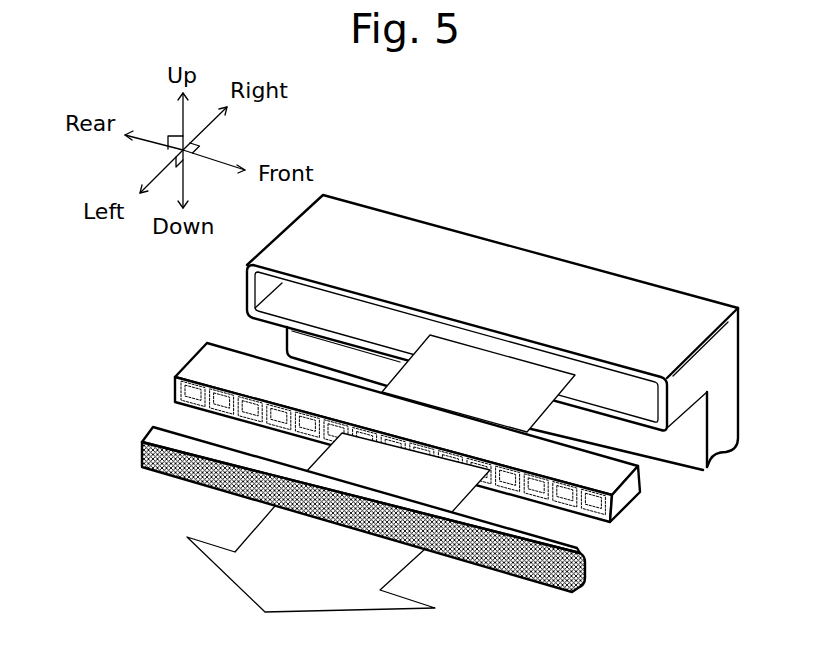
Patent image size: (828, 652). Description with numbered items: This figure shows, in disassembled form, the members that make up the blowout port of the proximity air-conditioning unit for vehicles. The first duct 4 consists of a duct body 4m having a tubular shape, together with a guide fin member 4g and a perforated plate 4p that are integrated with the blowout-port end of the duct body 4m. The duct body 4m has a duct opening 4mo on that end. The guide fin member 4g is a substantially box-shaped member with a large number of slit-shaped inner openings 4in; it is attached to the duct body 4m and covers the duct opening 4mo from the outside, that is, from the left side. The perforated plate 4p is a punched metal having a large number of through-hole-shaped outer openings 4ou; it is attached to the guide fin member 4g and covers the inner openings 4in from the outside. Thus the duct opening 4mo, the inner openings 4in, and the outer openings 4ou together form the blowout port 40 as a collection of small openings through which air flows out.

The first duct 4 is at (586, 260).
The duct body 4m is at (472, 244).
The duct opening 4mo is at (352, 300).
The guide fin member 4g is at (373, 444).
The inner openings 4in is at (203, 386).
The perforated plate 4p is at (345, 513).
The outer openings 4ou is at (307, 517).
The light 40 is at (440, 423).